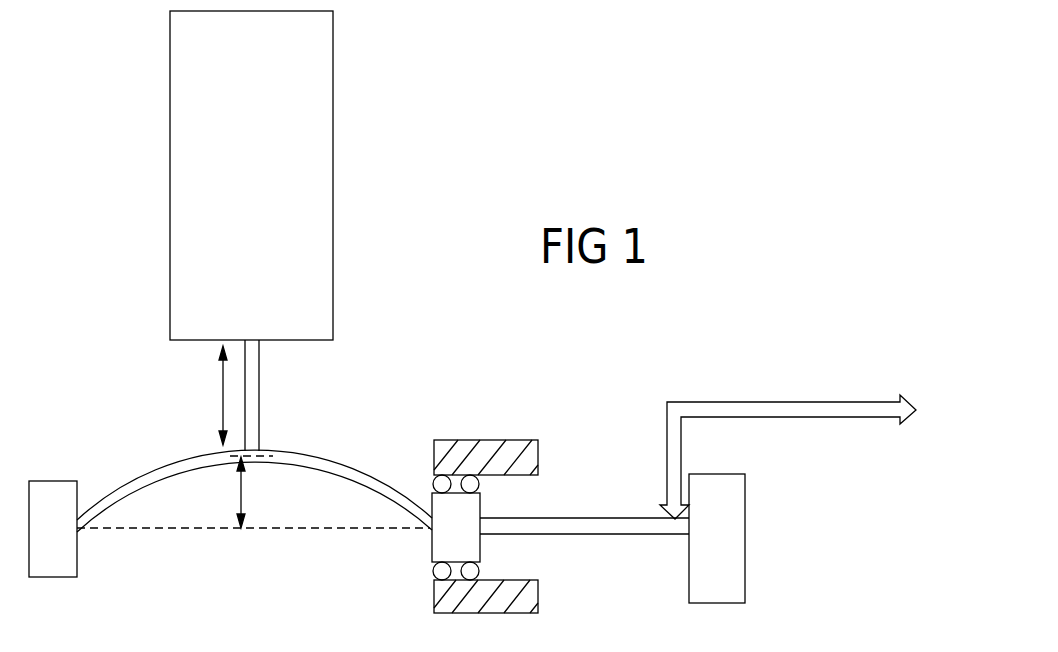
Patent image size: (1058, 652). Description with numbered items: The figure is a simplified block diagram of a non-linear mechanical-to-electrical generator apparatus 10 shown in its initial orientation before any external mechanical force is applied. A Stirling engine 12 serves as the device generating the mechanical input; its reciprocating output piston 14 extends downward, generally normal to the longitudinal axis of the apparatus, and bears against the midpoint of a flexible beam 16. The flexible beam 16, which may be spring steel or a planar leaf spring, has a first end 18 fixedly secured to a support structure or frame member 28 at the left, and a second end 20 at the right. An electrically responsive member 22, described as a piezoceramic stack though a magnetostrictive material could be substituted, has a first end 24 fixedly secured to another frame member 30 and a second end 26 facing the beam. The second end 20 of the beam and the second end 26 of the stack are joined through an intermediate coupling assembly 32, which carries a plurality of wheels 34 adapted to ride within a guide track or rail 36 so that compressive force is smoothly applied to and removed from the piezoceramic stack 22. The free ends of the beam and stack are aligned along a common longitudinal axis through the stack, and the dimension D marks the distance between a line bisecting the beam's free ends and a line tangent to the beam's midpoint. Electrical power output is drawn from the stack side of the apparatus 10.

The mechanical-to-electrical generator apparatus 10 is at (668, 365).
The Stirling engine 12 is at (325, 273).
The reciprocating output piston 14 is at (253, 382).
The flexible beam 16 is at (147, 465).
The first end of flexible beam 18 is at (90, 519).
The second end of flexible beam 20 is at (420, 515).
The electrically responsive member 22 is at (611, 508).
The first end of piezoceramic stack 24 is at (675, 534).
The second end of piezoceramic stack 26 is at (495, 535).
The frame member 28 is at (47, 557).
The frame member 30 is at (703, 474).
The coupling assembly 32 is at (494, 506).
The wheels 34 is at (437, 480).
The guide track 36 is at (447, 593).